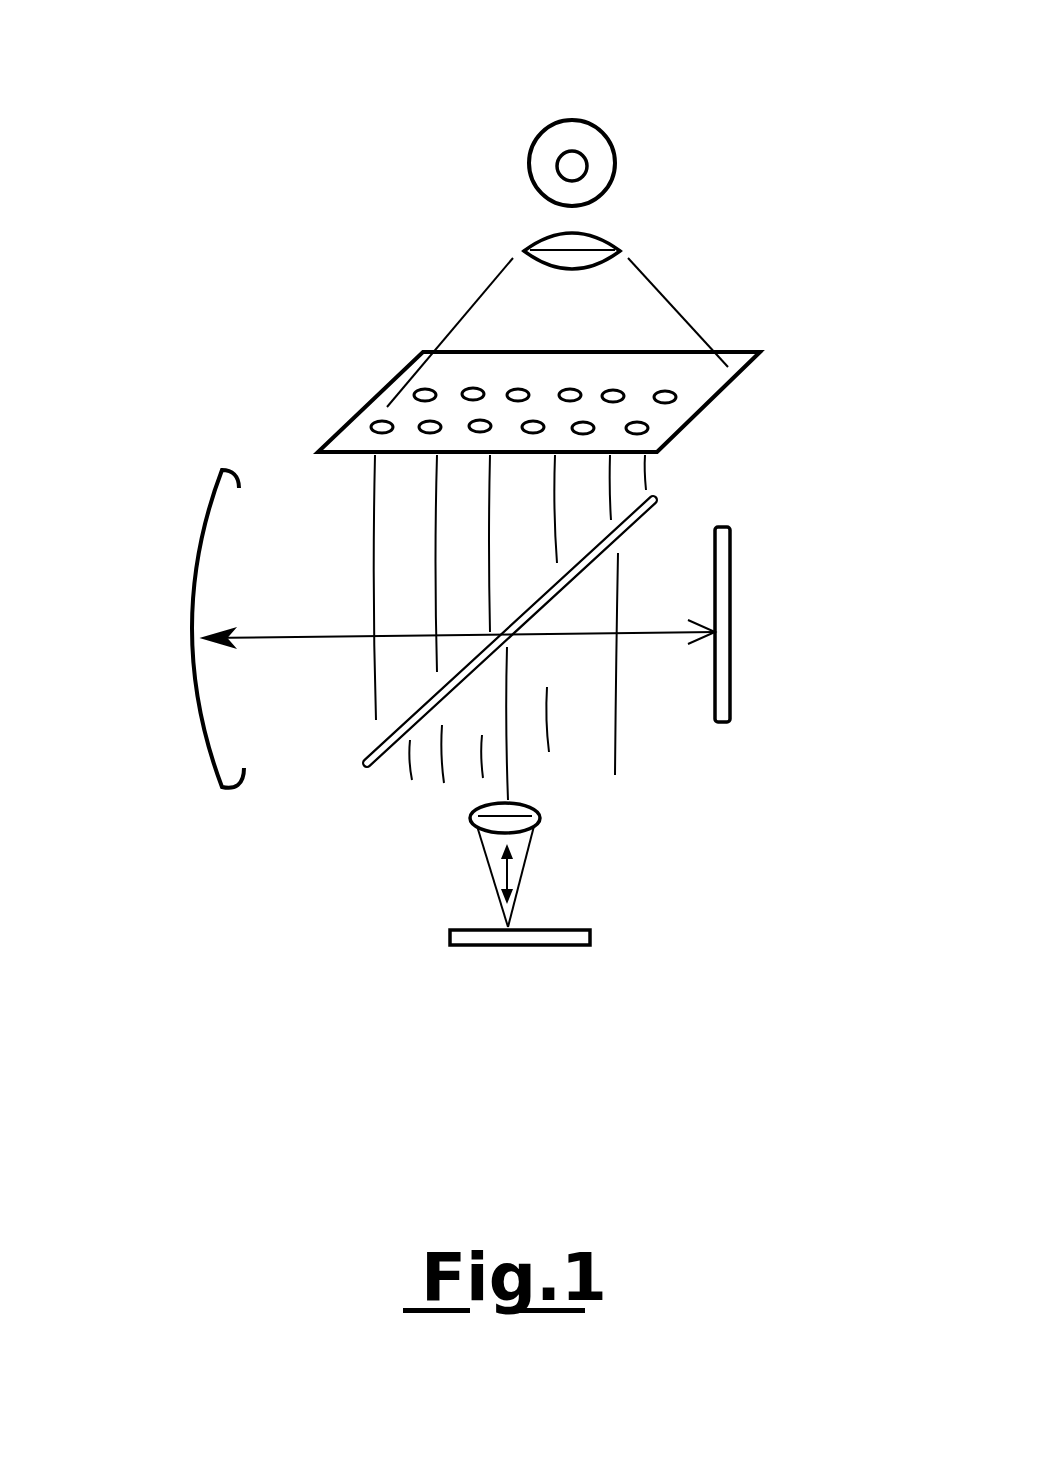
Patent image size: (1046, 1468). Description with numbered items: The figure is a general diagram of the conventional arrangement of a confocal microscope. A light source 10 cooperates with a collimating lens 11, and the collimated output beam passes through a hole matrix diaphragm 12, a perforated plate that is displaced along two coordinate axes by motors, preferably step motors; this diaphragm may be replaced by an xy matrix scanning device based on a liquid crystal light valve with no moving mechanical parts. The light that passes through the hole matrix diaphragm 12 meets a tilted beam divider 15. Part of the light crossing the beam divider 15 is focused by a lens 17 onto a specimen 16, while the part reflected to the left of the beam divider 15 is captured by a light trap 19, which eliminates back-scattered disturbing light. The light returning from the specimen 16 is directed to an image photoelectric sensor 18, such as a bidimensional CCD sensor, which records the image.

The light source 10 is at (598, 132).
The collimating lens 11 is at (537, 242).
The hole matrix diaphragm 12 is at (358, 407).
The beam divider 15 is at (387, 743).
The specimen 16 is at (475, 937).
The lens 17 is at (467, 820).
The image photoelectric sensor 18 is at (728, 700).
The light trap 19 is at (192, 560).